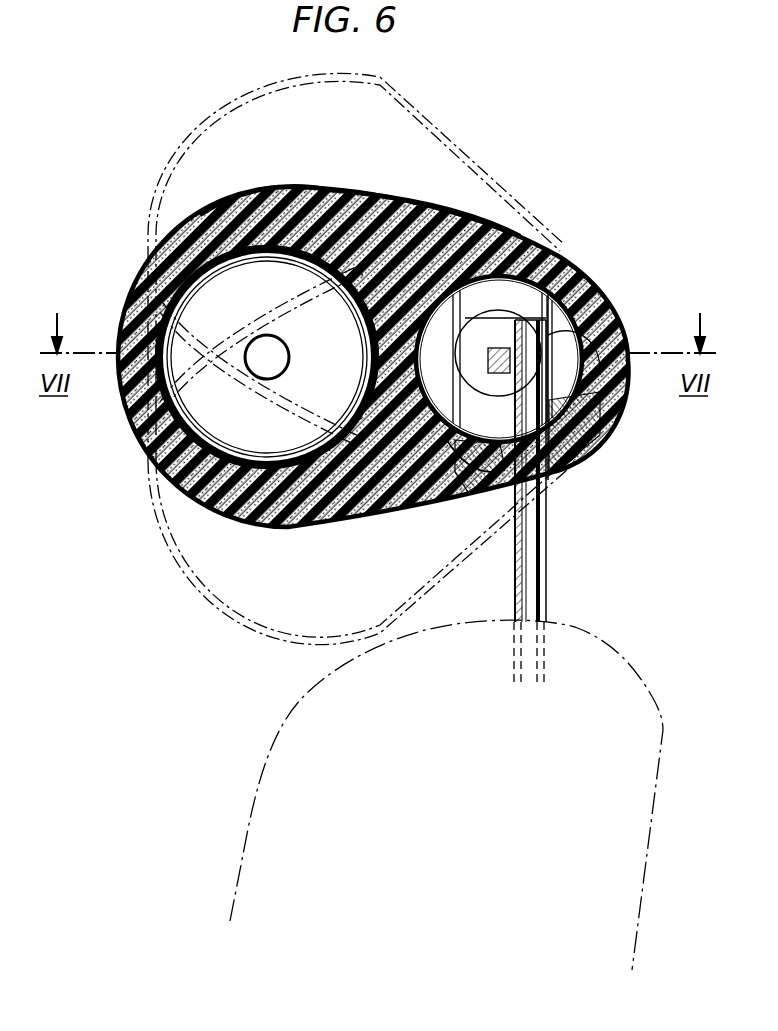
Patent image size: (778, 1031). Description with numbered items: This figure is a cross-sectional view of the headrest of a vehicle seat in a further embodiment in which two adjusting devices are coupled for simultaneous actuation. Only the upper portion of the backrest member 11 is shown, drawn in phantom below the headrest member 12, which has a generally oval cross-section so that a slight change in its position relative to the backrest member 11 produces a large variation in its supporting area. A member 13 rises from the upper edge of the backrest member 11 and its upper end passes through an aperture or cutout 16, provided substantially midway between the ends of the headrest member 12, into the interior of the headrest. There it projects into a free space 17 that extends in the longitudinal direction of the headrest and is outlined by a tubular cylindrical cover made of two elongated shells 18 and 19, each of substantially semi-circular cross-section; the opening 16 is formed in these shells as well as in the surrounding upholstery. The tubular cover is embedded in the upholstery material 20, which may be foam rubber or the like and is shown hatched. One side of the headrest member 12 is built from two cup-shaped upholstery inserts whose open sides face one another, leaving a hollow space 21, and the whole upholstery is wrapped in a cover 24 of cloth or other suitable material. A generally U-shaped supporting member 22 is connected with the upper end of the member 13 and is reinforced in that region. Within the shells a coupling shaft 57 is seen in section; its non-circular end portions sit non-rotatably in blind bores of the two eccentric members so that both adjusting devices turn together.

The backrest member 11 is at (262, 822).
The headrest member 12 is at (130, 440).
The member 13 is at (530, 587).
The aperture or cutout 16 is at (598, 447).
The free space 17 is at (466, 497).
The elongated shell 18 is at (583, 264).
The elongated shell 19 is at (431, 392).
The upholstery material 20 is at (405, 206).
The hollow space 21 is at (331, 369).
The supporting member 22 is at (616, 318).
The cover 24 is at (297, 186).
The coupling shaft 57 is at (497, 346).